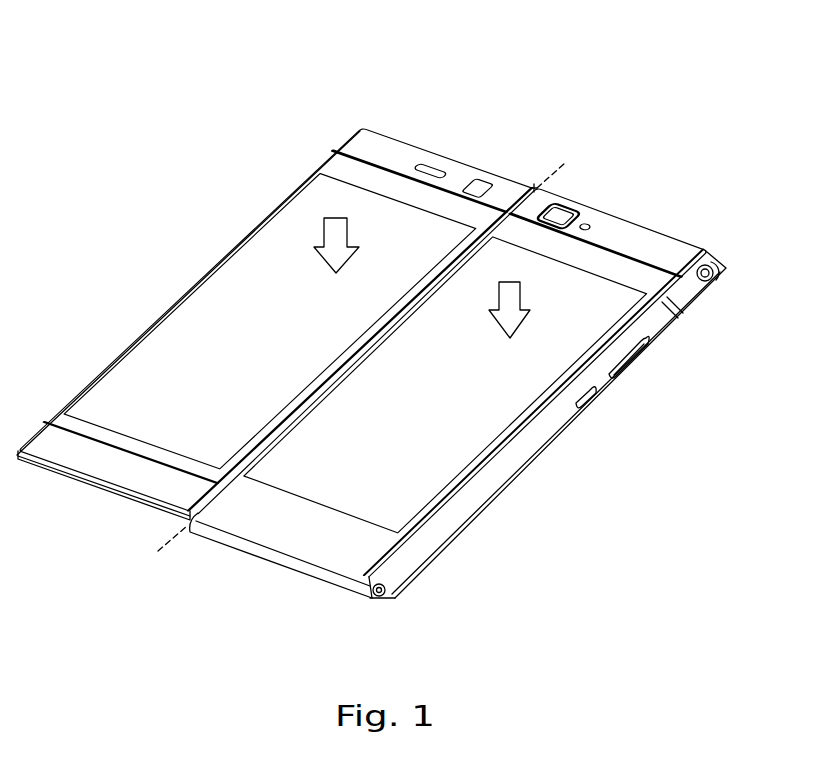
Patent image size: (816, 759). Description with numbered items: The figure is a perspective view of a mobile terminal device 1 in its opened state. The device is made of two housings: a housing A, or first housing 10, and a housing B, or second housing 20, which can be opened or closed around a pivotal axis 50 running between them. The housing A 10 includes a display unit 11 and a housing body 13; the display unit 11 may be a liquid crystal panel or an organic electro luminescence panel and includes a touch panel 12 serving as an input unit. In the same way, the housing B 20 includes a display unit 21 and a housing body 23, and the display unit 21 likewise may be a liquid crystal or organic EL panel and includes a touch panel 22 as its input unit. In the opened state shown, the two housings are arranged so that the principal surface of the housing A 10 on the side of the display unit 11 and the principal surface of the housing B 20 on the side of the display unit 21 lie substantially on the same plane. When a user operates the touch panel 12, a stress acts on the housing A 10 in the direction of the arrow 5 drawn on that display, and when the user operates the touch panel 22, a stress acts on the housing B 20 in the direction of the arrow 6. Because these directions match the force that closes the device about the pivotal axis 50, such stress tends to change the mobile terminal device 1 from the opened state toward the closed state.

The mobile terminal device 1 is at (140, 152).
The housing A (first housing) 10 is at (284, 282).
The display unit 11 is at (272, 248).
The touch panel 12 is at (150, 353).
The housing body 13 is at (110, 471).
The housing B (second housing) 20 is at (466, 348).
The display unit 21 is at (511, 381).
The touch panel 22 is at (417, 486).
The housing body 23 is at (528, 450).
The pivotal axis 50 is at (543, 185).
The arrow 5 is at (349, 227).
The arrow 6 is at (518, 288).